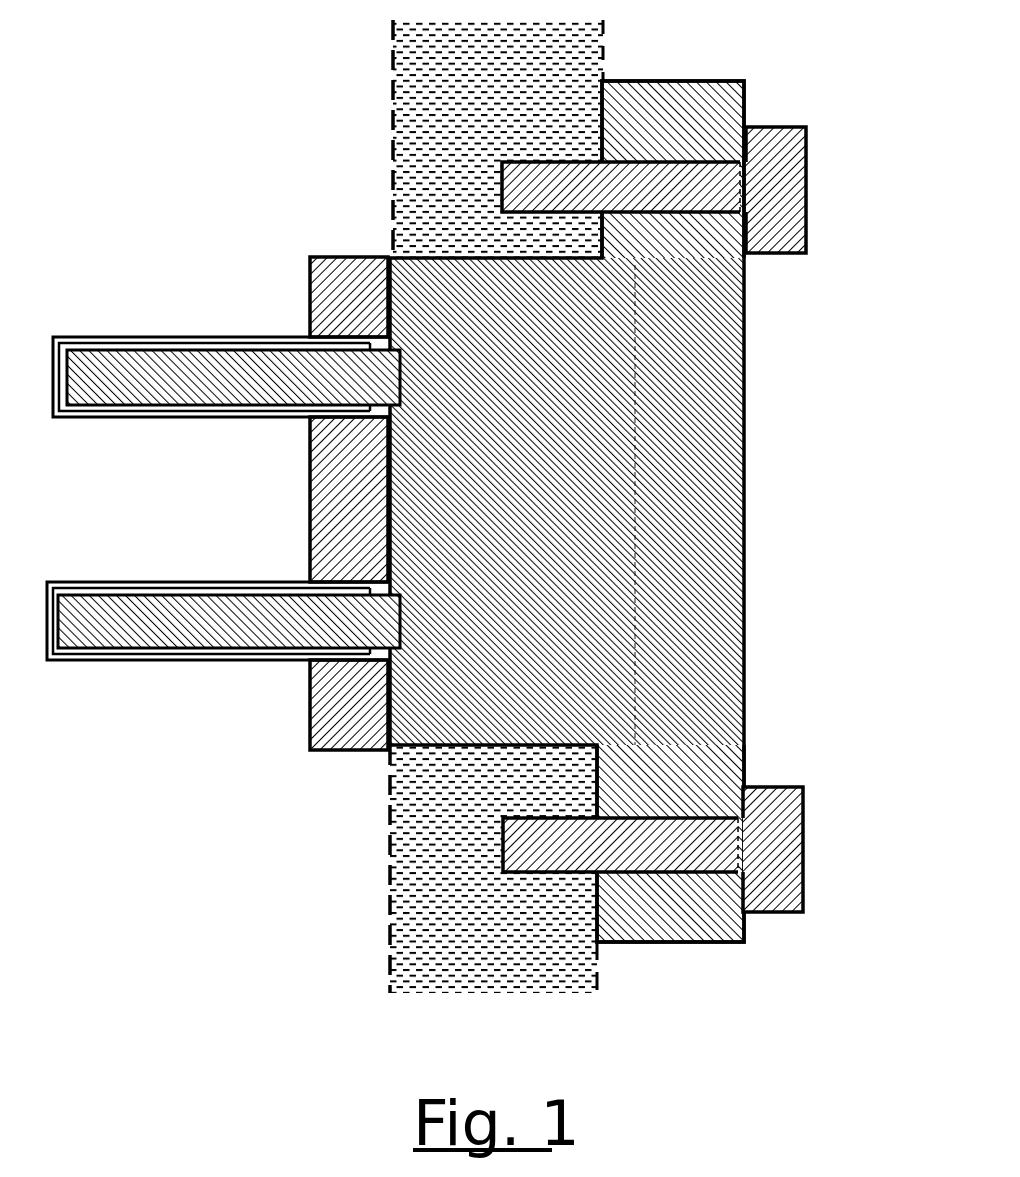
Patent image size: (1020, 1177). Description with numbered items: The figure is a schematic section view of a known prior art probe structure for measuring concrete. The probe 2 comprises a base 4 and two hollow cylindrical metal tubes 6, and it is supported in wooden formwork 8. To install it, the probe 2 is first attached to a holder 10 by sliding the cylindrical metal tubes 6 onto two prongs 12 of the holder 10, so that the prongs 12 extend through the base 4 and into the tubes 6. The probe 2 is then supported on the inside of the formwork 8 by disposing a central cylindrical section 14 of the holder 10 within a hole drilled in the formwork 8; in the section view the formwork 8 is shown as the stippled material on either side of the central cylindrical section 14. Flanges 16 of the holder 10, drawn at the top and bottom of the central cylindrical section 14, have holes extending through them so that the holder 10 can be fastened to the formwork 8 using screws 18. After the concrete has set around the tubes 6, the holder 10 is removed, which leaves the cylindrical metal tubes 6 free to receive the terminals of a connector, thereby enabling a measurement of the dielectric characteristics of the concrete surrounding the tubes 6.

The probe 2 is at (215, 847).
The base 4 is at (315, 270).
The hollow cylindrical metal tubes 6 is at (112, 418).
The wooden formwork 8 is at (413, 80).
The holder 10 is at (800, 487).
The prongs 12 is at (215, 390).
The central cylindrical section 14 is at (717, 377).
The flanges 16 is at (692, 90).
The screws 18 is at (785, 125).